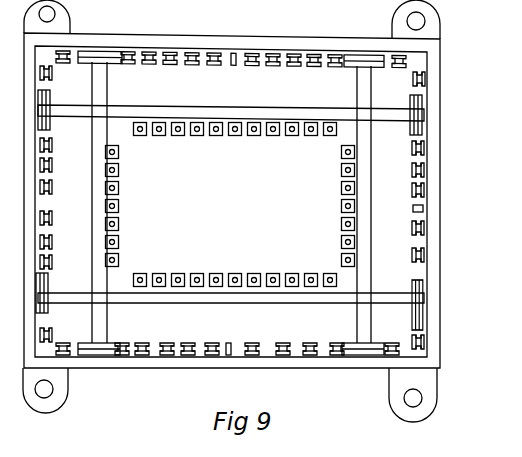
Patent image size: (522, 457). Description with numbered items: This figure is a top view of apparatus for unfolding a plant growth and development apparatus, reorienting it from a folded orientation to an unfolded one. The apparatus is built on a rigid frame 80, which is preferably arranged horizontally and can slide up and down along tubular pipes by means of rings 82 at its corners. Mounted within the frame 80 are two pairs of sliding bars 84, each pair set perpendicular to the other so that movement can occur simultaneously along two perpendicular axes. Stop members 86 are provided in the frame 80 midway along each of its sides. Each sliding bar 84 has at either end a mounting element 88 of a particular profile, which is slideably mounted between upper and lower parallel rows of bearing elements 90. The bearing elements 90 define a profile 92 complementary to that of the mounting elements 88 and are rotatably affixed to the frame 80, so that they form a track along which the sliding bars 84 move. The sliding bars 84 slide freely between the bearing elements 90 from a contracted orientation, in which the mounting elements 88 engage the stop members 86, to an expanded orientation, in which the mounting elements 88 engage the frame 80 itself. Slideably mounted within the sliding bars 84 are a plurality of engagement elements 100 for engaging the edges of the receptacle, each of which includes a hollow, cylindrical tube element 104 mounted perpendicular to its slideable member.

The rigid frame 80 is at (432, 312).
The rings 82 is at (414, 398).
The sliding bars 84 is at (108, 104).
The stop members 86 is at (234, 64).
The mounting element 88 is at (113, 63).
The bearing elements 90 is at (430, 266).
The profile 92 is at (323, 352).
The engagement elements 100 is at (124, 244).
The hollow cylindrical tube element 104 is at (340, 170).